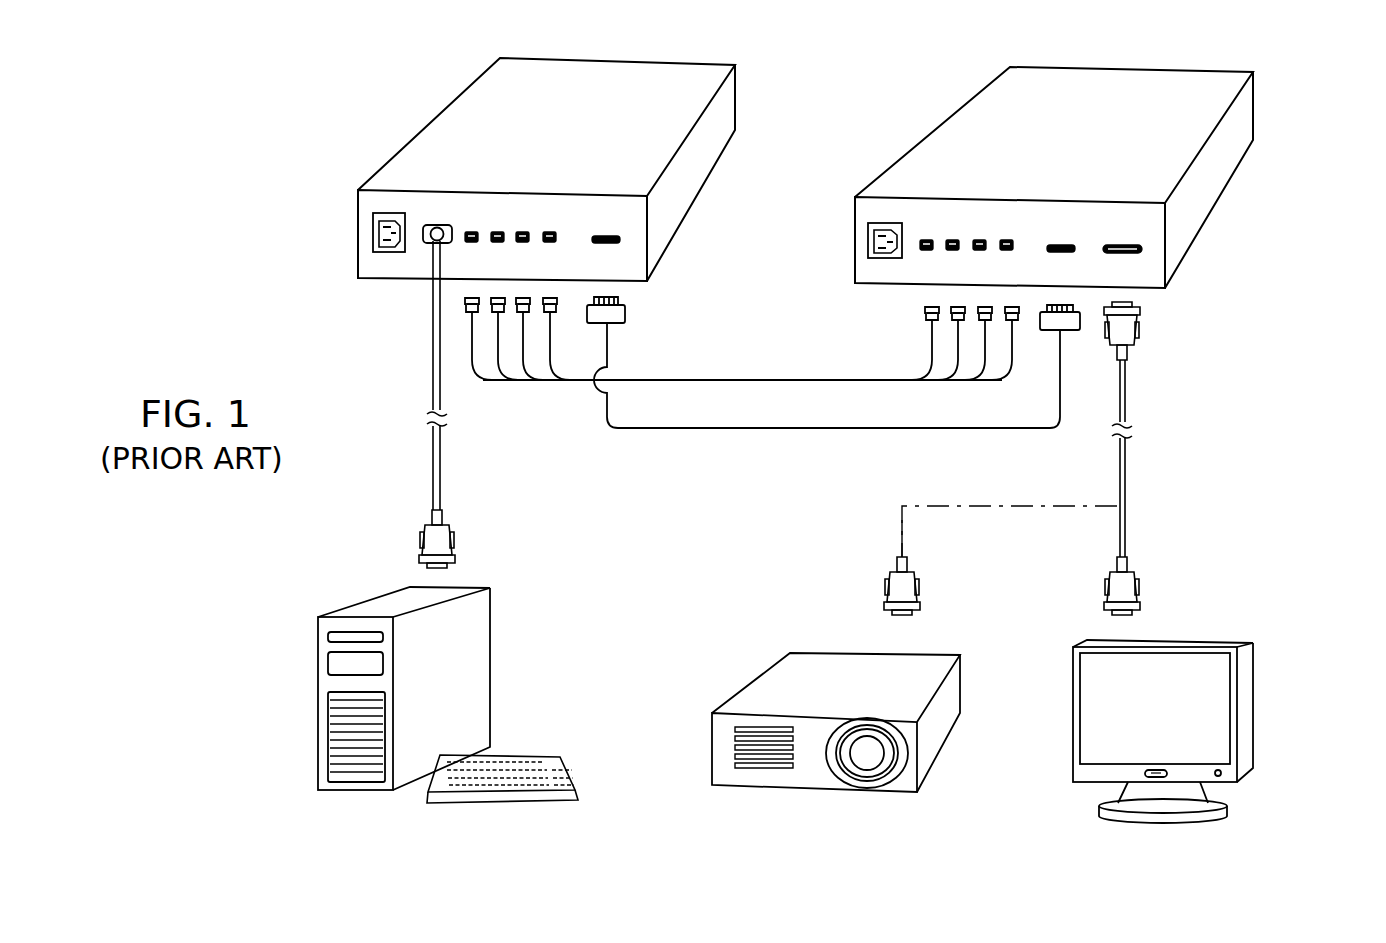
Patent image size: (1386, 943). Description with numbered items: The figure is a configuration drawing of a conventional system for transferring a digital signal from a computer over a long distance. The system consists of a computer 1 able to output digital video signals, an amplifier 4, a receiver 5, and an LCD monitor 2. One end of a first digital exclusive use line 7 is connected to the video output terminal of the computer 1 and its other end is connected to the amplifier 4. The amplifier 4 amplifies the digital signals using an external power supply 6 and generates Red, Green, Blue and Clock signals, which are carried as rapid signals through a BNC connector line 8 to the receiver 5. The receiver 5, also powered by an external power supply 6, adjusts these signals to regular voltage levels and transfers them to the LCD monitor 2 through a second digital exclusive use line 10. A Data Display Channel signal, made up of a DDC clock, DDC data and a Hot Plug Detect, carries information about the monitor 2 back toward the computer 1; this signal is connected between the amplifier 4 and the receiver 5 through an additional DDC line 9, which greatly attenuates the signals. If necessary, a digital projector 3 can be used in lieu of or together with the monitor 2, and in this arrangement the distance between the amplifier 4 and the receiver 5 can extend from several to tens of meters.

The computer 1 is at (325, 680).
The LCD monitor 2 is at (1243, 700).
The digital projector 3 is at (767, 680).
The amplifier 4 is at (470, 101).
The receiver 5 is at (978, 112).
The external power supply 6 is at (377, 229).
The first digital exclusive use line 7 is at (433, 312).
The BNC connector line 8 is at (695, 380).
The DDC line 9 is at (722, 430).
The second digital exclusive use line 10 is at (1125, 477).